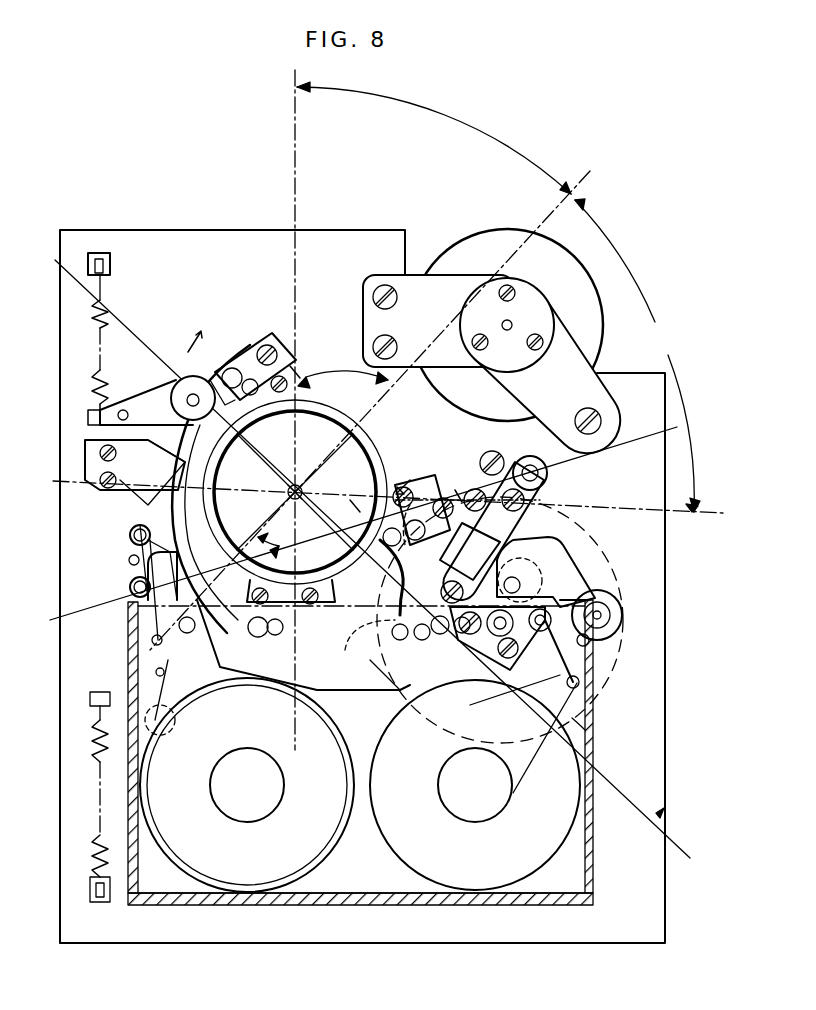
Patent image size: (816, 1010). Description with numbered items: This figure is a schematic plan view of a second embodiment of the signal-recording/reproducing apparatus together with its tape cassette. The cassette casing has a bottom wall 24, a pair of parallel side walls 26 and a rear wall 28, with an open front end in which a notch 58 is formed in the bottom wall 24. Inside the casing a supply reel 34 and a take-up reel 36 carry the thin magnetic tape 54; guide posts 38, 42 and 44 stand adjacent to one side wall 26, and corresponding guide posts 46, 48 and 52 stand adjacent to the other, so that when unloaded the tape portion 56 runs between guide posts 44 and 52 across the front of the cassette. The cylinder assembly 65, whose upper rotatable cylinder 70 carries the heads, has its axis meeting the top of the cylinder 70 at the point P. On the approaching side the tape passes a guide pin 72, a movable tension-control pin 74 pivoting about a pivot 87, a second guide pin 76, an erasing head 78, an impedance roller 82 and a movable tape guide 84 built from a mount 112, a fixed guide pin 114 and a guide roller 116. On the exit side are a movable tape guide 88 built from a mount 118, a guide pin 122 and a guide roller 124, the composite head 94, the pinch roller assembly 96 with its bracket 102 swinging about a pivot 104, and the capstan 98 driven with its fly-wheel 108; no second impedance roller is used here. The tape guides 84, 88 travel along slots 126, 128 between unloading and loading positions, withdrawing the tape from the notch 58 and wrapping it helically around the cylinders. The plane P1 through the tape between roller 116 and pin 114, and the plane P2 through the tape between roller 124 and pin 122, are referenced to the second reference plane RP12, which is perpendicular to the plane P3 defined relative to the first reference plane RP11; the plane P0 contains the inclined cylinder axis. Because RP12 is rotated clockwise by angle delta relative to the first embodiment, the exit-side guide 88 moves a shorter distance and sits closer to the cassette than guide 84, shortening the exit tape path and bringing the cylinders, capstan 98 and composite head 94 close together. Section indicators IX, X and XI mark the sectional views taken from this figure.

The bottom wall 24 is at (360, 752).
The side walls 26 is at (100, 650).
The rear wall 28 is at (366, 906).
The supply reel 34 is at (238, 868).
The take-up reel 36 is at (490, 870).
The guide post 38 is at (150, 658).
The guide post 42 is at (138, 628).
The guide post 44 is at (184, 625).
The guide post 46 is at (590, 690).
The guide post 48 is at (590, 645).
The guide post 52 is at (502, 643).
The magnetic tape 54 is at (268, 500).
The tape portion 56 is at (343, 612).
The notch 58 is at (377, 675).
The cylinder assembly 65 is at (470, 468).
The upper rotatable cylinder 70 is at (372, 445).
The pin 72 is at (128, 583).
The movable pin 74 is at (128, 557).
The pin 76 is at (128, 535).
The erasing head 78 is at (148, 500).
The impedance roller 82 is at (177, 393).
The movable tape guide 84 is at (290, 657).
The pivot 87 is at (168, 735).
The movable tape guide 88 is at (392, 586).
The composite head 94 is at (514, 512).
The pinch roller assembly 96 is at (577, 577).
The capstan 98 is at (480, 662).
The bracket 102 is at (540, 572).
The pivot 104 is at (617, 618).
The fly-wheel 108 is at (585, 720).
The mount 112 is at (212, 372).
The guide pin 114 is at (295, 355).
The guide roller 116 is at (231, 366).
The mount 118 is at (456, 563).
The guide pin 122 is at (385, 492).
The guide roller 124 is at (520, 462).
The slot 126 is at (226, 622).
The slot 128 is at (406, 620).
The intersection point P is at (290, 497).
The plane P0 is at (690, 522).
The plane P1 is at (152, 318).
The plane P2 is at (613, 449).
The plane P3 is at (655, 812).
The first reference plane RP11 is at (575, 195).
The second reference plane RP12 is at (294, 160).
The section line IX is at (329, 474).
The section line X is at (246, 342).
The section line XI is at (405, 495).